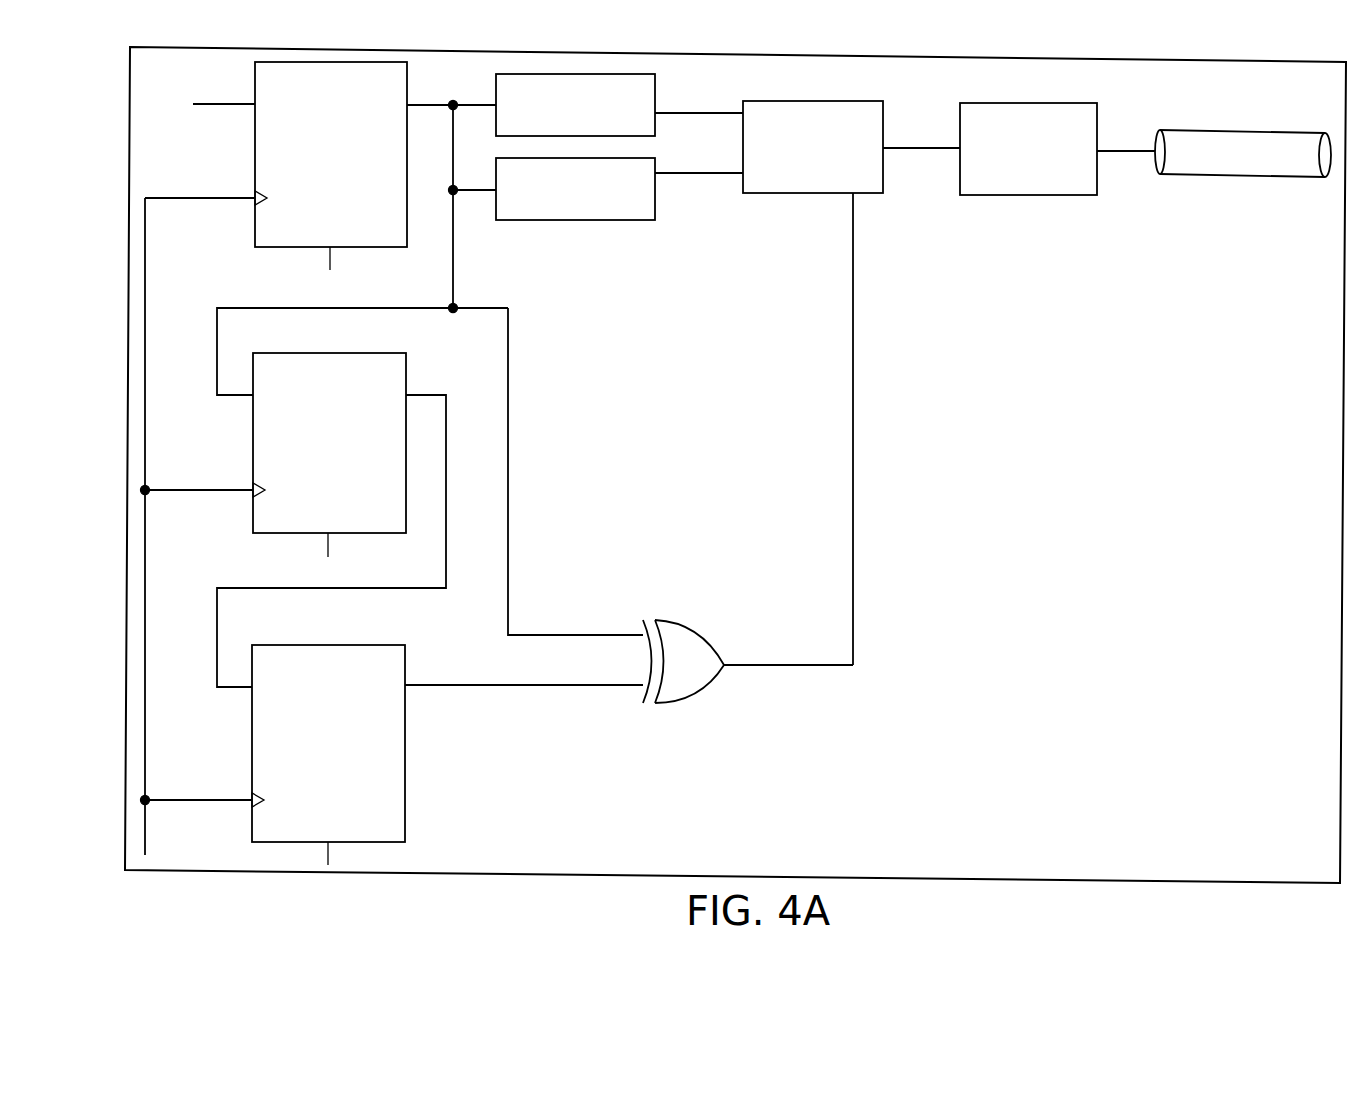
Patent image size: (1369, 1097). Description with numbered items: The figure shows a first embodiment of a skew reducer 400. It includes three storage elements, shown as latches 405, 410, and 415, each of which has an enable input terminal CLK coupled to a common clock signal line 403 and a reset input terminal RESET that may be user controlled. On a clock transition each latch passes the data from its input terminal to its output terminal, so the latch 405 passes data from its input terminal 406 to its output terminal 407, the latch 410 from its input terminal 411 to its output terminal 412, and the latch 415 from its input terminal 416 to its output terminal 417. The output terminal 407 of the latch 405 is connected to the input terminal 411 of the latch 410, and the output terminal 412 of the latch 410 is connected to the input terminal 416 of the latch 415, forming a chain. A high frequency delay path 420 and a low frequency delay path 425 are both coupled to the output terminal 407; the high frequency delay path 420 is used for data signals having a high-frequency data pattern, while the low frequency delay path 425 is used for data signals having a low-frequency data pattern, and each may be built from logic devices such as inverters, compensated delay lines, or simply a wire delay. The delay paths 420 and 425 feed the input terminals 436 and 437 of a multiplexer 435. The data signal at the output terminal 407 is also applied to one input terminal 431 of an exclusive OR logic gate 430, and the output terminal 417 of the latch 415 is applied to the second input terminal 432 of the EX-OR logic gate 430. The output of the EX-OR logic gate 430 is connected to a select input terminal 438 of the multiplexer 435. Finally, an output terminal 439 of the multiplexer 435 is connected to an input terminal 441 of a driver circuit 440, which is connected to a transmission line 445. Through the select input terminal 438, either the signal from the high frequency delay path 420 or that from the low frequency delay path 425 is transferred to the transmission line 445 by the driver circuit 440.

The skew reducer 400 is at (735, 465).
The clock signal line 403 is at (147, 218).
The latch 405 is at (331, 166).
The input terminal 406 is at (226, 104).
The output terminal 407 is at (416, 104).
The latch 410 is at (329, 455).
The input terminal 411 is at (236, 397).
The output terminal 412 is at (416, 395).
The latch 415 is at (328, 755).
The input terminal 416 is at (236, 689).
The output terminal 417 is at (420, 685).
The high frequency delay path 420 is at (575, 105).
The low frequency delay path 425 is at (575, 189).
The exclusive OR logic gate 430 is at (683, 661).
The input terminal 431 is at (545, 635).
The second input terminal 432 is at (545, 685).
The multiplexer 435 is at (813, 147).
The input terminal 436 is at (675, 113).
The input terminal 437 is at (675, 173).
The select input terminal 438 is at (855, 248).
The output terminal 439 is at (897, 148).
The driver circuit 440 is at (1028, 150).
The input terminal 441 is at (963, 151).
The transmission line 445 is at (1243, 153).